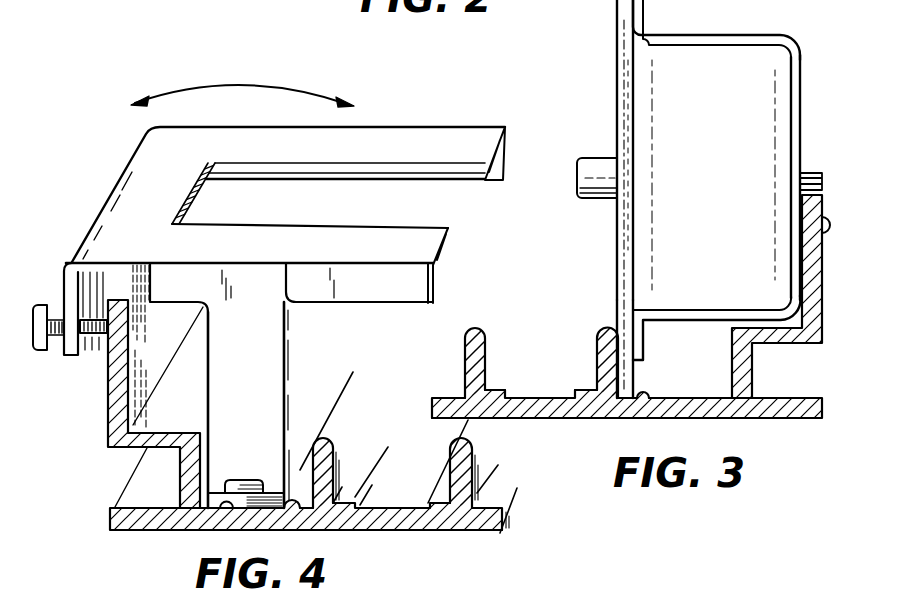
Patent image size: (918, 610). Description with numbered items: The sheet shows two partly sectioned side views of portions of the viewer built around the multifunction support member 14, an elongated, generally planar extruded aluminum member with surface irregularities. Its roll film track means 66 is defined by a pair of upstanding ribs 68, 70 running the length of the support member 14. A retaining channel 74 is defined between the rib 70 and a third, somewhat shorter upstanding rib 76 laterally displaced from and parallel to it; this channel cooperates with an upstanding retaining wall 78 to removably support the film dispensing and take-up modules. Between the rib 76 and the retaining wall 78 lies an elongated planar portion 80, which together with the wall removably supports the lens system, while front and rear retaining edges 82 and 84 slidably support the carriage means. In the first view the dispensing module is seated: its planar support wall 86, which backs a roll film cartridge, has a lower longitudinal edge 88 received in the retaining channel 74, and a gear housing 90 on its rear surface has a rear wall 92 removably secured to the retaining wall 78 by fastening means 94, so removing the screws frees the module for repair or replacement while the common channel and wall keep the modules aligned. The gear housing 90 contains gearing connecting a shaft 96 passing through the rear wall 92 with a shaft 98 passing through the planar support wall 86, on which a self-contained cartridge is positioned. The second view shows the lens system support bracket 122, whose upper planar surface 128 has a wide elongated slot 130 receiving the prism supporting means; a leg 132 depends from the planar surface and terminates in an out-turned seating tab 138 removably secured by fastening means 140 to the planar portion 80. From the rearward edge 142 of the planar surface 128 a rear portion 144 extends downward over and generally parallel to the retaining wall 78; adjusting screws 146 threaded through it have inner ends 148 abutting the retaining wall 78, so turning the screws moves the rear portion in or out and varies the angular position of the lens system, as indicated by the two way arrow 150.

In FIG. 4, the multifunction support member 14 is at (276, 416).
In FIG. 3, the multifunction support member 14 is at (639, 325).
In FIG. 3, the roll film track means 66 is at (538, 394).
In FIG. 4, the upstanding rib 68 is at (460, 470).
In FIG. 3, the upstanding rib 68 is at (481, 331).
In FIG. 4, the upstanding rib 70 is at (333, 438).
In FIG. 3, the upstanding rib 70 is at (598, 346).
In FIG. 3, the retaining channel 74 is at (618, 326).
In FIG. 4, the third upstanding rib 76 is at (292, 496).
In FIG. 3, the third upstanding rib 76 is at (647, 390).
In FIG. 4, the upstanding retaining wall 78 is at (108, 412).
In FIG. 3, the upstanding retaining wall 78 is at (845, 296).
In FIG. 3, the elongated planar portion 80 is at (693, 402).
In FIG. 4, the front retaining edge 82 is at (505, 518).
In FIG. 3, the front retaining edge 82 is at (433, 408).
In FIG. 4, the rear retaining edge 84 is at (110, 518).
In FIG. 3, the rear retaining edge 84 is at (822, 412).
In FIG. 3, the planar support wall 86 is at (617, 116).
In FIG. 3, the lower longitudinal edge 88 is at (622, 406).
In FIG. 3, the gear housing 90 is at (727, 36).
In FIG. 3, the rear wall 92 is at (792, 233).
In FIG. 3, the fastening means 94 is at (832, 226).
In FIG. 3, the shaft 96 is at (824, 175).
In FIG. 3, the shaft 98 is at (586, 158).
In FIG. 4, the support bracket 122 is at (255, 317).
In FIG. 4, the upper planar surface 128 is at (137, 190).
In FIG. 4, the elongated slot 130 is at (368, 214).
In FIG. 4, the leg 132 is at (286, 382).
In FIG. 4, the out-turned seating tab 138 is at (227, 500).
In FIG. 4, the fastening means 140 is at (237, 478).
In FIG. 4, the rearward edge 142 is at (88, 222).
In FIG. 4, the rear portion 144 is at (65, 283).
In FIG. 4, the adjusting screw 146 is at (32, 330).
In FIG. 4, the inner end 148 is at (103, 340).
In FIG. 4, the two way arrow 150 is at (222, 84).